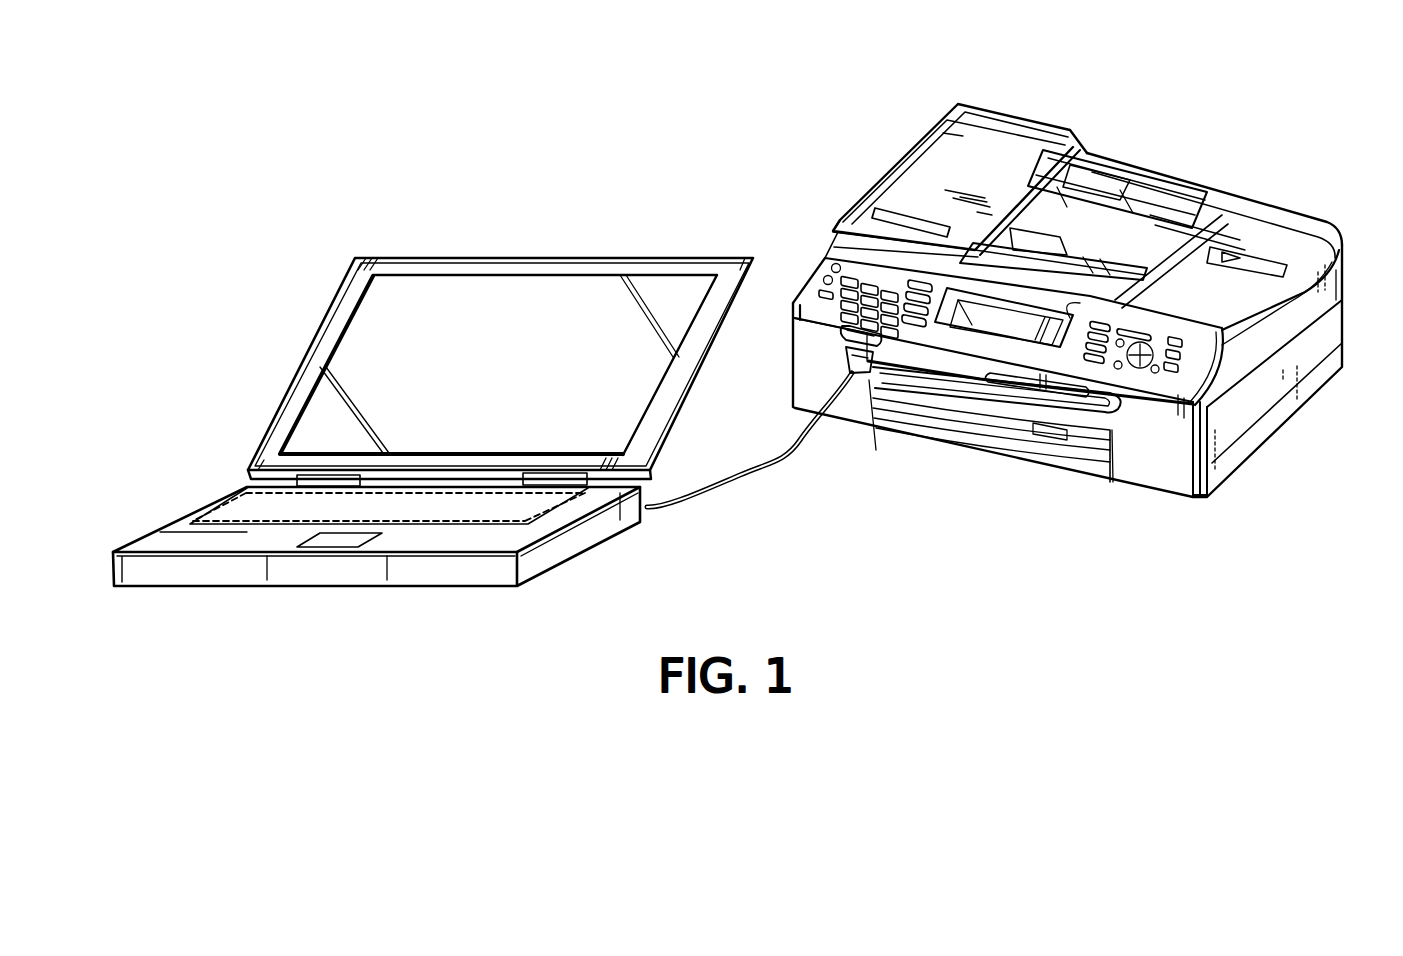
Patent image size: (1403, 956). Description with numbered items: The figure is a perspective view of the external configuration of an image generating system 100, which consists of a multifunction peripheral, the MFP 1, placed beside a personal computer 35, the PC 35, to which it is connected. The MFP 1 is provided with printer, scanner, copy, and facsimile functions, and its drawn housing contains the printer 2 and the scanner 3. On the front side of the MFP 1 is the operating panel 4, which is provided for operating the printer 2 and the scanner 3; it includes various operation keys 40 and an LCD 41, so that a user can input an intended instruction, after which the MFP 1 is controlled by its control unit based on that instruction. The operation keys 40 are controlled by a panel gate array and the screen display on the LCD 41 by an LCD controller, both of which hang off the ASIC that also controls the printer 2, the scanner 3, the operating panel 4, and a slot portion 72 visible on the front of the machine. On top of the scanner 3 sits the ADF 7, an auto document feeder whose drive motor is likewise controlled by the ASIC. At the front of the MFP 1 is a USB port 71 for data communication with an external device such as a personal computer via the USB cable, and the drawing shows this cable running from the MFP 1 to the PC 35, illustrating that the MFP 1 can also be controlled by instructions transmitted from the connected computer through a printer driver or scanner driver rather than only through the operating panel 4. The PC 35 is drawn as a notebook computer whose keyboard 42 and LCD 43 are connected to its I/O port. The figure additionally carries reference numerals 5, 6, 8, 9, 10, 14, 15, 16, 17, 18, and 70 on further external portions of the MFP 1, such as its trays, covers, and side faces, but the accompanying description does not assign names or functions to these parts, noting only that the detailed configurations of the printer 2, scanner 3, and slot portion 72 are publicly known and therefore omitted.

The image generating system 100 is at (739, 142).
The MFP (Multi Function Peripheral) 1 is at (773, 432).
The printer 2 is at (778, 346).
The scanner 3 is at (1198, 142).
The operating panel 4 is at (818, 266).
The paper discharge opening 5 is at (922, 398).
The side face 6 is at (1333, 277).
The ADF (Auto Document Feeder) 7 is at (1016, 106).
The scanner unit 8 is at (1299, 199).
The scanner cover 9 is at (1230, 207).
The document tray 10 is at (1113, 178).
The paper feed tray 14 is at (1087, 470).
The paper discharge tray 15 is at (1065, 427).
The side cover 16 is at (1237, 397).
The bottom portion 17 is at (1182, 478).
The front corner portion 18 is at (1178, 397).
The personal computer 35 is at (516, 248).
The operation keys 40 is at (1185, 306).
The LCD (Liquid Crystal Display) 41 is at (1118, 290).
The keyboard 42 is at (530, 508).
The LCD 43 is at (363, 352).
The USB port 70 is at (880, 390).
The USB port 71 is at (847, 360).
The slot portion 72 is at (1047, 402).